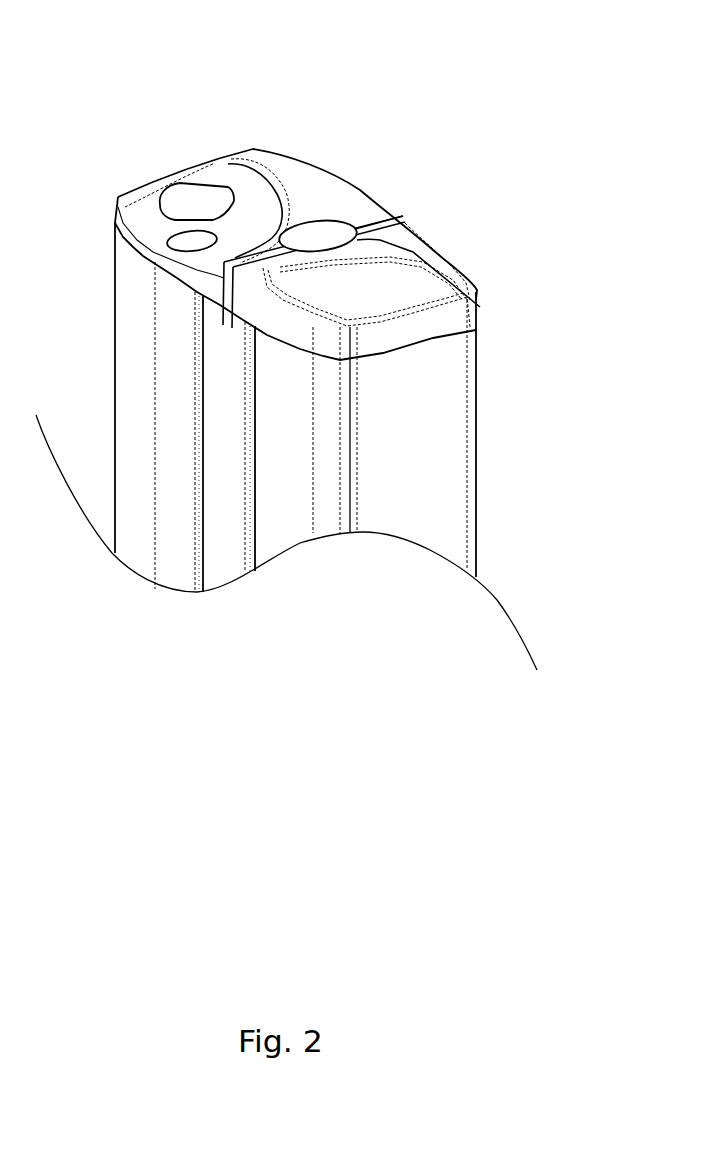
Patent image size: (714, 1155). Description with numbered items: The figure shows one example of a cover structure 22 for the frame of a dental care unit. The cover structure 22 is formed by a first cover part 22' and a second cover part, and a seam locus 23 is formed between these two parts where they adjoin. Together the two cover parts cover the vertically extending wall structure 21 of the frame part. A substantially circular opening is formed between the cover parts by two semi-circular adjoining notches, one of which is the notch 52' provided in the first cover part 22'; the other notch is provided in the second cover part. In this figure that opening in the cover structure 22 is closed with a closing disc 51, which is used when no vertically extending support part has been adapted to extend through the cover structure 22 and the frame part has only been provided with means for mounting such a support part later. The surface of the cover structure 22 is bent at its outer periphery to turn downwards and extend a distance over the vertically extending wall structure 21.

The vertically extending wall structure 21 is at (443, 435).
The cover structure 22 is at (296, 184).
The first cover part 22' is at (264, 181).
The seam locus 23 is at (415, 204).
The closing disc 51 is at (310, 247).
The semi-circular notch 52' is at (391, 192).